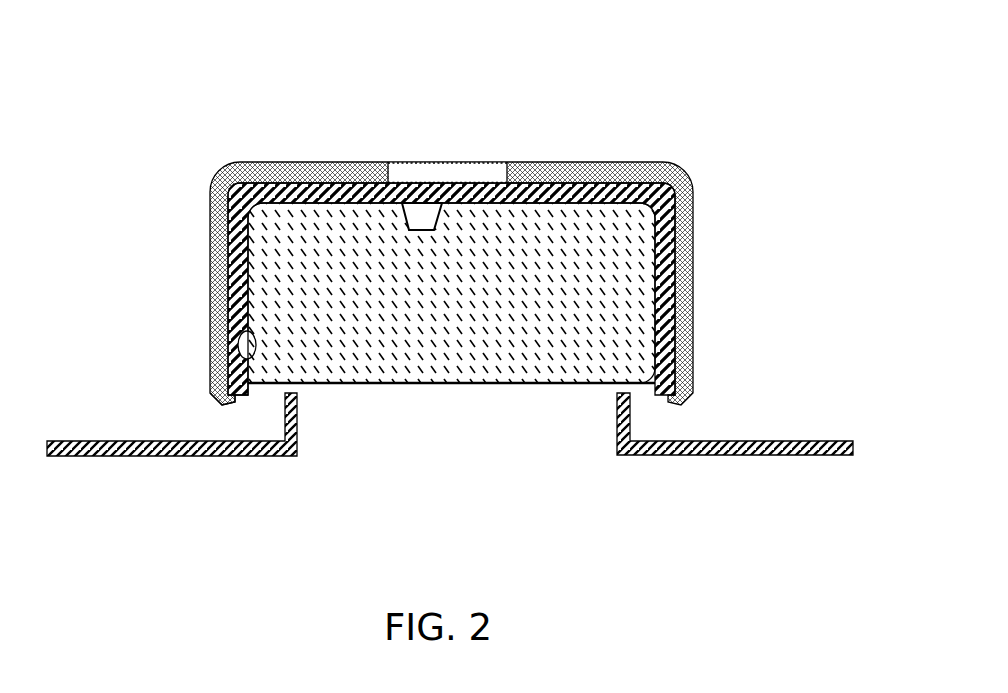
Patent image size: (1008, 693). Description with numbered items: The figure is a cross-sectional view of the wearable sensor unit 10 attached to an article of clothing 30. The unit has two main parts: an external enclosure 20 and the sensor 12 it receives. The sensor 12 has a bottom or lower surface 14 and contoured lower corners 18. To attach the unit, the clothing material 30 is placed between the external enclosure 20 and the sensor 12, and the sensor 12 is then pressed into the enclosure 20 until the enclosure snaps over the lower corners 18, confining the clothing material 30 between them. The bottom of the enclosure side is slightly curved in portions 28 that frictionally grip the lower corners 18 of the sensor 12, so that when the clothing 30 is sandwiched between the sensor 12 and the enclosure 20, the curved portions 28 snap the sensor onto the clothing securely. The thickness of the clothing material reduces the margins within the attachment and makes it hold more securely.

The wearable sensor unit 10 is at (646, 57).
The sensor 12 is at (622, 292).
The bottom surface 14 is at (434, 388).
The lower corners 18 is at (253, 383).
The enclosure 20 is at (680, 173).
The curved portions 28 is at (247, 323).
The article of clothing 30 is at (778, 440).